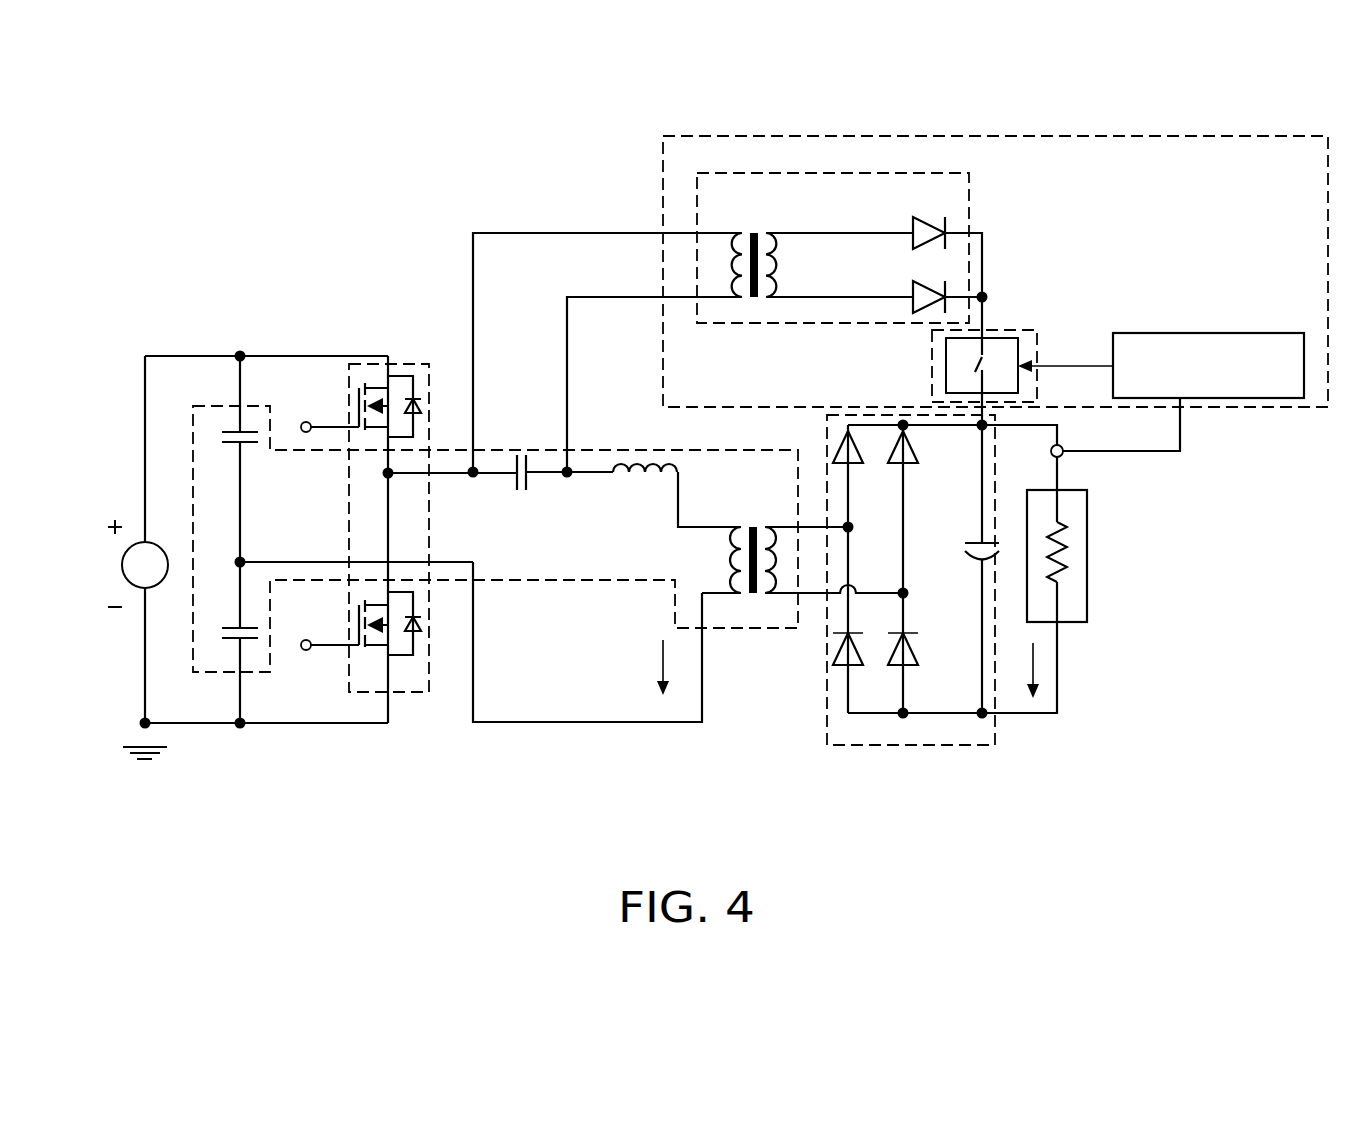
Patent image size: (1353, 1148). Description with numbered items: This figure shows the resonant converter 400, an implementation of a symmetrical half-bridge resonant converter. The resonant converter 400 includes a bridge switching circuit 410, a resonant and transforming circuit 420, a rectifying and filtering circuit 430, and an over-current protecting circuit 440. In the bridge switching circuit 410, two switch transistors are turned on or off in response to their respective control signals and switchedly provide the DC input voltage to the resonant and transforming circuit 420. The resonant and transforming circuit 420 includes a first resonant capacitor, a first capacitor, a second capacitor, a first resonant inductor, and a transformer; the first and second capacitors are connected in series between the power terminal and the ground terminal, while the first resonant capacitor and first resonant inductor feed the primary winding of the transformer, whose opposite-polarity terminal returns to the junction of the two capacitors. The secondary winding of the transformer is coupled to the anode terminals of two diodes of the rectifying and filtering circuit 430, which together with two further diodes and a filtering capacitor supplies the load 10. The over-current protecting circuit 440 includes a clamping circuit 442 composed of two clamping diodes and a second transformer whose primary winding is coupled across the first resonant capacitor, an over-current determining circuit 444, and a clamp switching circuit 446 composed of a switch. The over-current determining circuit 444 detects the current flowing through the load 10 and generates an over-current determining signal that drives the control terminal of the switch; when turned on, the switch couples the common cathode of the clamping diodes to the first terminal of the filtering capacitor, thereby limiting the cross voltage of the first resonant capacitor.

The resonant converter 400 is at (699, 483).
The bridge switching circuit 410 is at (360, 352).
The resonant and transforming circuit 420 is at (735, 630).
The rectifying and filtering circuit 430 is at (889, 748).
The over-current protecting circuit 440 is at (1263, 410).
The clamping circuit 442 is at (972, 193).
The over-current determining circuit 444 is at (1180, 333).
The clamp switching circuit 446 is at (1022, 330).
The load 10 is at (1088, 529).